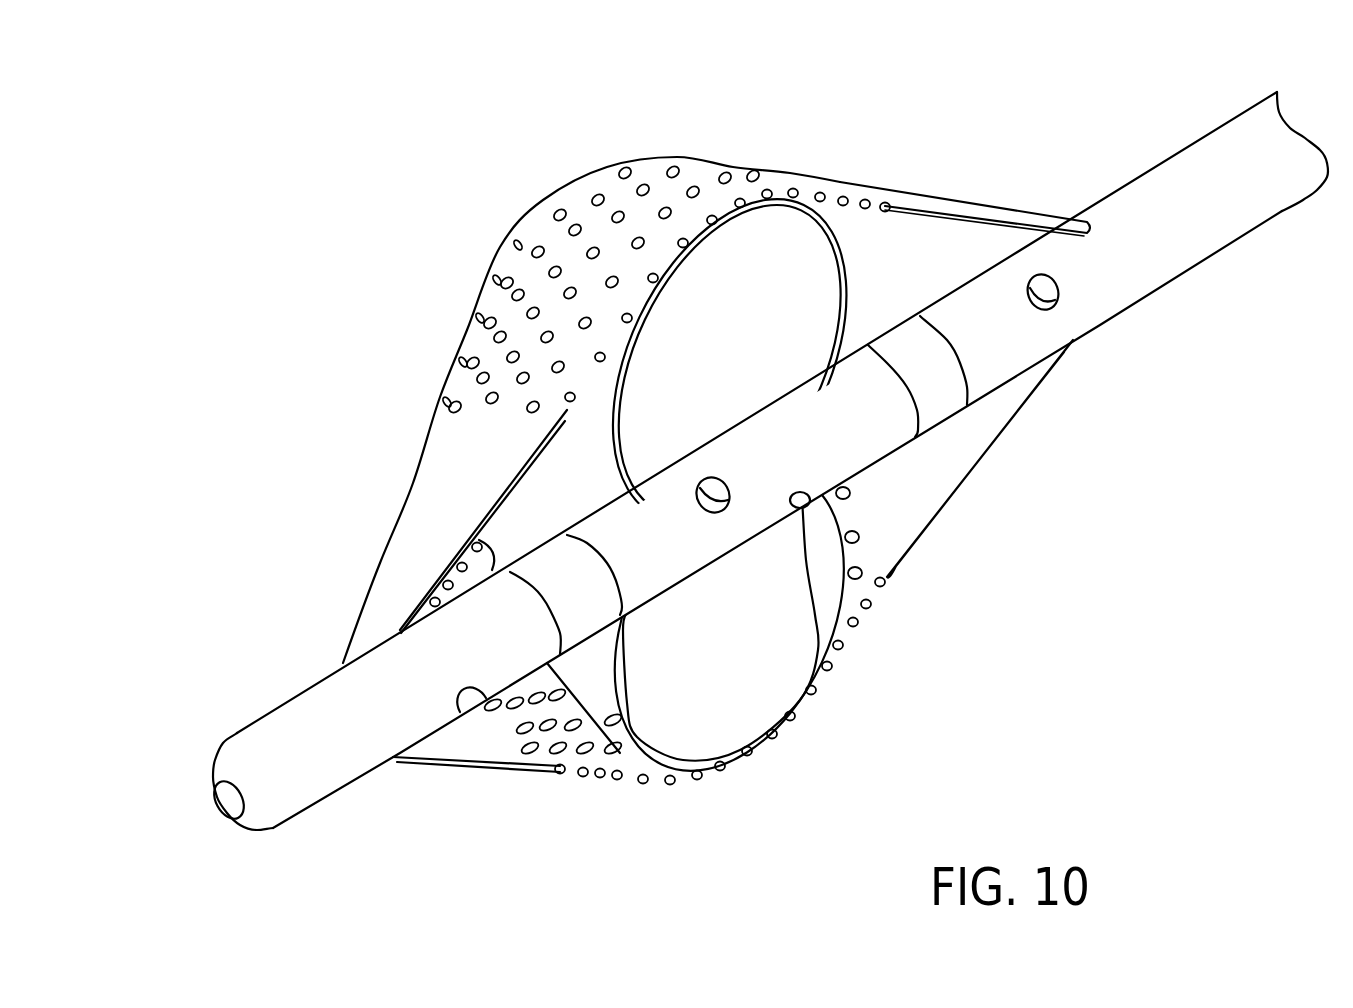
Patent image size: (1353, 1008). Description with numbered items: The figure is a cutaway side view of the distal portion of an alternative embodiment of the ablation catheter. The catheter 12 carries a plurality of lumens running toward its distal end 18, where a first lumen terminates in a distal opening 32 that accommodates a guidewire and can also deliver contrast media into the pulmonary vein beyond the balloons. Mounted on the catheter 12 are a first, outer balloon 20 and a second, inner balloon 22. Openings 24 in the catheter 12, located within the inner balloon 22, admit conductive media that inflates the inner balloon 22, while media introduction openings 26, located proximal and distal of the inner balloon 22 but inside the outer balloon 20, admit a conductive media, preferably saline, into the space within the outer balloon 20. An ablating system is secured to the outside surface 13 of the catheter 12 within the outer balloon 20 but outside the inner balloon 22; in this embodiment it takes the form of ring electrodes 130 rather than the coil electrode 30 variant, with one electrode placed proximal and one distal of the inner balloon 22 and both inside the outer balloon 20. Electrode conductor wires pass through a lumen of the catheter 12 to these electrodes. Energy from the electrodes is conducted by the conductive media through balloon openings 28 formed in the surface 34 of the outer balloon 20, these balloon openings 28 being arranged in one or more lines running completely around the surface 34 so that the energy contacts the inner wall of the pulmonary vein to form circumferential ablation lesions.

The catheter 12 is at (700, 449).
The outside surface 13 is at (1110, 188).
The distal end 18 is at (200, 766).
The first, outer balloon 20 is at (922, 182).
The second, inner balloon 22 is at (617, 712).
The openings 24 is at (720, 507).
The media introduction openings 26 is at (1050, 308).
The balloon openings 28 is at (673, 168).
The electrode 30 is at (1005, 397).
The distal opening 32 is at (225, 803).
The surface 34 is at (565, 422).
The ring electrodes 130 is at (908, 340).